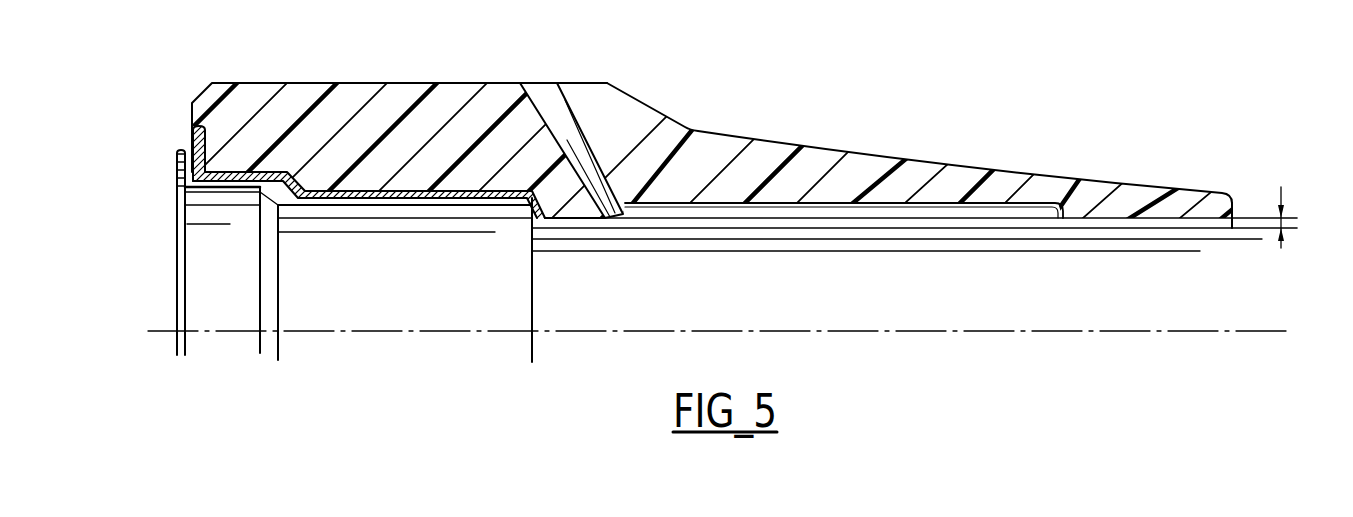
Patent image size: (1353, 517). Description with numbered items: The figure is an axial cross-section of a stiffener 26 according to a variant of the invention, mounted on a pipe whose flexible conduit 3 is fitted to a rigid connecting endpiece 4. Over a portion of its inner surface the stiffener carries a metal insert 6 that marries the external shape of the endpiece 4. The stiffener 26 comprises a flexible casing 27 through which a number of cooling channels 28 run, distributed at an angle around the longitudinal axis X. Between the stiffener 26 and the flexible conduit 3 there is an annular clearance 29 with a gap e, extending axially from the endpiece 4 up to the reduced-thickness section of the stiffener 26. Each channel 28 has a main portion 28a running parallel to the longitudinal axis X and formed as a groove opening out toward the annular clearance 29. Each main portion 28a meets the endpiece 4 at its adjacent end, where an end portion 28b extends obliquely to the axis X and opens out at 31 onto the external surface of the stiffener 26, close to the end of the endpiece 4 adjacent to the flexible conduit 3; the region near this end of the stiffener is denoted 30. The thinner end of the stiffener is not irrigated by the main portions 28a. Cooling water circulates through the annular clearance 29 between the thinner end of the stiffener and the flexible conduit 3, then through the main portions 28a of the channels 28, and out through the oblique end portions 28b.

The flexible conduit 3 is at (845, 265).
The rigid connecting endpiece 4 is at (207, 273).
The metal insert 6 is at (423, 193).
The stiffener 26 is at (393, 131).
The flexible casing 27 is at (657, 137).
The cooling channels 28 is at (827, 208).
The main portion 28a is at (965, 213).
The end portion 28b is at (555, 115).
The annular clearance 29 is at (1130, 225).
The end face of block 30 is at (1240, 202).
The opening 31 is at (526, 82).
The longitudinal axis X is at (435, 332).
The gap e is at (1293, 208).